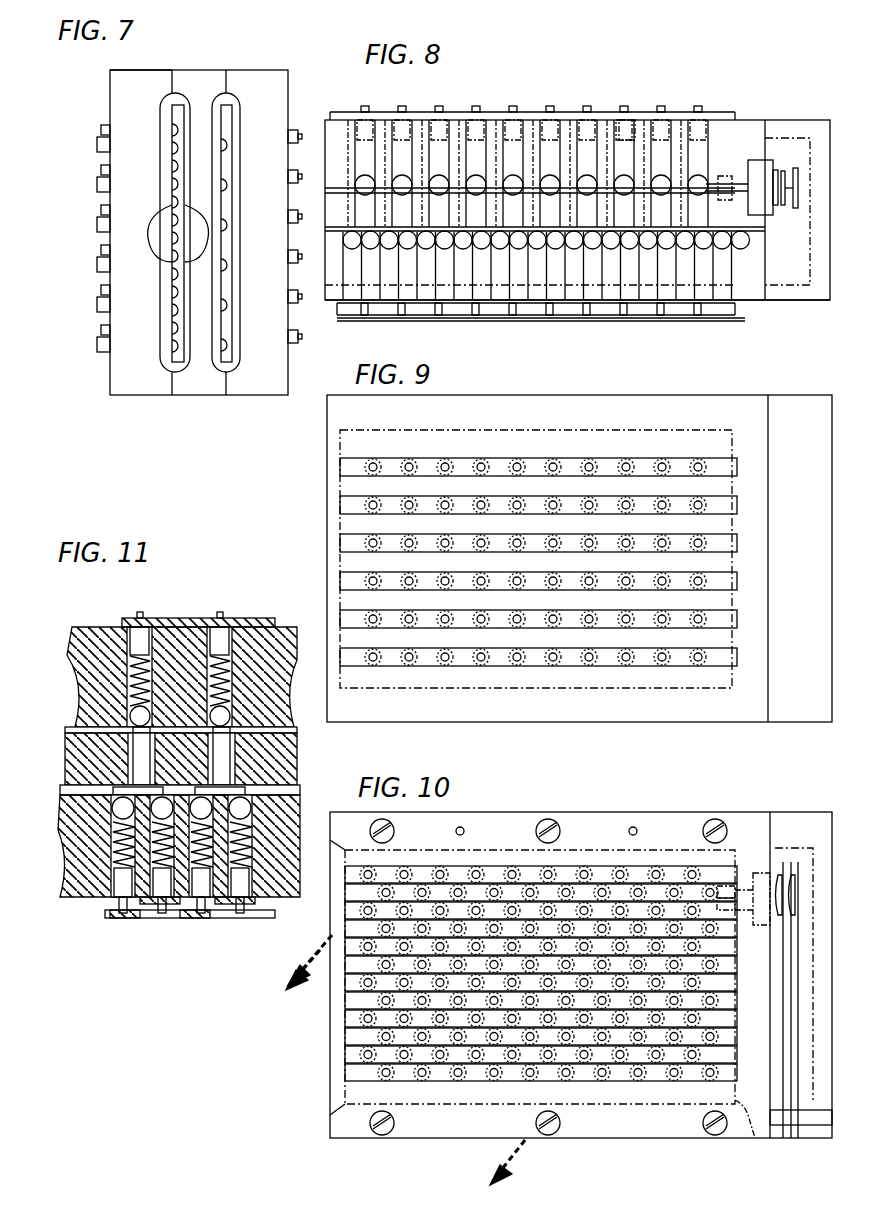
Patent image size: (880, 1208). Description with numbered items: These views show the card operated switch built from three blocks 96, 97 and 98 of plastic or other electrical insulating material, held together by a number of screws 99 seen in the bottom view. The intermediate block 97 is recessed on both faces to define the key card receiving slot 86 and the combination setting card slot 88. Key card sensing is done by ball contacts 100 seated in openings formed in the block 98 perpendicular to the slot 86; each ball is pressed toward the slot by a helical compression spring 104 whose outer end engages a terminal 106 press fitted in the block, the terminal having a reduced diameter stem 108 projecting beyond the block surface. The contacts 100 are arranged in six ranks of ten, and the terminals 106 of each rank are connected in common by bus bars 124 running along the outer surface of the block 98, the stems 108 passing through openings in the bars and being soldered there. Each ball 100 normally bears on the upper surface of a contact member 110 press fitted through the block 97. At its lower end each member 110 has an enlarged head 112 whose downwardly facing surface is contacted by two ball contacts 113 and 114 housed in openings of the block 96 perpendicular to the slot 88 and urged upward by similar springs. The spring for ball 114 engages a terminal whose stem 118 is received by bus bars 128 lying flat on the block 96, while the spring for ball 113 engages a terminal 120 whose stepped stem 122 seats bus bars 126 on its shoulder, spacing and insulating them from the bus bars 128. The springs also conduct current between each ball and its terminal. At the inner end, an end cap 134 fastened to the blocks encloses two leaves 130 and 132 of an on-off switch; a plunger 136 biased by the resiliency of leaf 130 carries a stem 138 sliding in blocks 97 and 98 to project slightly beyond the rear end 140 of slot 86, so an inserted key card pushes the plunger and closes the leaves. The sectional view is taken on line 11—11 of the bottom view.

In FIG. 7, the key card receiving slot 86 is at (227, 378).
In FIG. 8, the key card receiving slot 86 is at (670, 183).
In FIG. 11, the key card receiving slot 86 is at (70, 732).
In FIG. 7, the combination setting card slot 88 is at (178, 375).
In FIG. 8, the combination setting card slot 88 is at (700, 238).
In FIG. 11, the combination setting card slot 88 is at (80, 797).
In FIG. 7, the block 96 is at (147, 70).
In FIG. 8, the block 96 is at (778, 302).
In FIG. 10, the block 96 is at (492, 812).
In FIG. 11, the block 96 is at (282, 897).
In FIG. 7, the intermediate block 97 is at (198, 70).
In FIG. 8, the intermediate block 97 is at (752, 228).
In FIG. 7, the block 98 is at (272, 72).
In FIG. 8, the block 98 is at (740, 128).
In FIG. 9, the block 98 is at (652, 398).
In FIG. 11, the block 98 is at (290, 636).
In FIG. 10, the screws 99 is at (395, 831).
In FIG. 7, the ball contacts 100 is at (226, 145).
In FIG. 11, the ball contacts 100 is at (128, 716).
In FIG. 11, the helical compression spring 104 is at (126, 634).
In FIG. 8, the terminal 106 is at (655, 130).
In FIG. 11, the terminal 106 is at (140, 628).
In FIG. 9, the stem 108 is at (392, 447).
In FIG. 11, the stem 108 is at (224, 620).
In FIG. 11, the contact members 110 is at (115, 742).
In FIG. 11, the enlarged head 112 is at (113, 791).
In FIG. 7, the ball contact 113 is at (174, 298).
In FIG. 11, the ball contact 113 is at (210, 778).
In FIG. 7, the ball contact 114 is at (172, 278).
In FIG. 11, the ball contact 114 is at (250, 798).
In FIG. 10, the stem 118 is at (372, 1068).
In FIG. 11, the stem 118 is at (238, 913).
In FIG. 11, the terminal 120 is at (190, 905).
In FIG. 10, the stepped stem 122 is at (458, 1080).
In FIG. 11, the stepped stem 122 is at (218, 907).
In FIG. 7, the bus bars 124 is at (292, 296).
In FIG. 8, the bus bars 124 is at (596, 112).
In FIG. 9, the bus bars 124 is at (340, 468).
In FIG. 10, the bus bars 124 is at (541, 973).
In FIG. 11, the bus bars 124 is at (138, 618).
In FIG. 7, the bus bars 126 is at (97, 304).
In FIG. 8, the bus bars 126 is at (695, 320).
In FIG. 10, the bus bars 126 is at (345, 1041).
In FIG. 11, the bus bars 126 is at (110, 913).
In FIG. 7, the bus bars 128 is at (100, 289).
In FIG. 8, the bus bars 128 is at (732, 303).
In FIG. 10, the bus bars 128 is at (345, 1024).
In FIG. 11, the bus bars 128 is at (160, 904).
In FIG. 8, the leaf 130 is at (783, 188).
In FIG. 10, the leaf 130 is at (783, 870).
In FIG. 8, the leaf 132 is at (791, 188).
In FIG. 10, the leaf 132 is at (798, 870).
In FIG. 8, the end cap 134 is at (805, 120).
In FIG. 9, the end cap 134 is at (782, 402).
In FIG. 10, the end cap 134 is at (833, 812).
In FIG. 8, the plunger 136 is at (760, 160).
In FIG. 10, the plunger 136 is at (757, 870).
In FIG. 10, the stem 138 is at (745, 880).
In FIG. 10, the rear end 140 is at (752, 1132).
In FIG. 10, the section line 11 is at (418, 1060).
In FIG. 11, the section line 11 is at (305, 960).